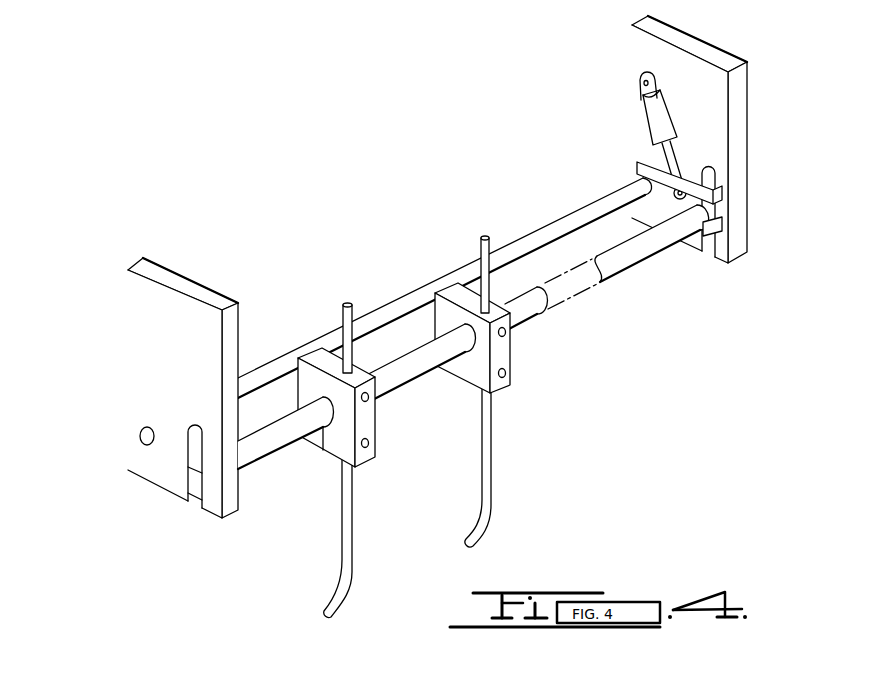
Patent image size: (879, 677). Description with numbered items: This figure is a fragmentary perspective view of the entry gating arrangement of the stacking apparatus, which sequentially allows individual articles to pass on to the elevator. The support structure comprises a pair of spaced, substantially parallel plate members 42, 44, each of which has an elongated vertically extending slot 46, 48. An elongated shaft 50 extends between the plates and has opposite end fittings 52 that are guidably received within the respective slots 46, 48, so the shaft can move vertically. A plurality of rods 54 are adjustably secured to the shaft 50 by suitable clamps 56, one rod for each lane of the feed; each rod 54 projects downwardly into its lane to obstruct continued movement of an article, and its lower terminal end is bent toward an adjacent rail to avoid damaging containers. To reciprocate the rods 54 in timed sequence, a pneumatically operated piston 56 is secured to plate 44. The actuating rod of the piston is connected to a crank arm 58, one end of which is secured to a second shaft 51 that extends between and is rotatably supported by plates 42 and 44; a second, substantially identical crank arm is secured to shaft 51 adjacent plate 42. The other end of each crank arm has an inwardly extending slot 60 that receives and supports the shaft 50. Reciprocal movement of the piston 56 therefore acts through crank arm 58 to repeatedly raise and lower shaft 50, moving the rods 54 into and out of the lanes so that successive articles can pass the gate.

The plate member 42 is at (158, 328).
The plate member 44 is at (647, 58).
The slot 46 is at (188, 440).
The slot 48 is at (715, 176).
The shaft 50 is at (392, 367).
The second shaft 51 is at (522, 240).
The end fitting 52 is at (193, 477).
The rod 54 is at (482, 488).
The clamp 56 is at (462, 270).
The crank arm 58 is at (628, 194).
The slot 60 is at (722, 212).